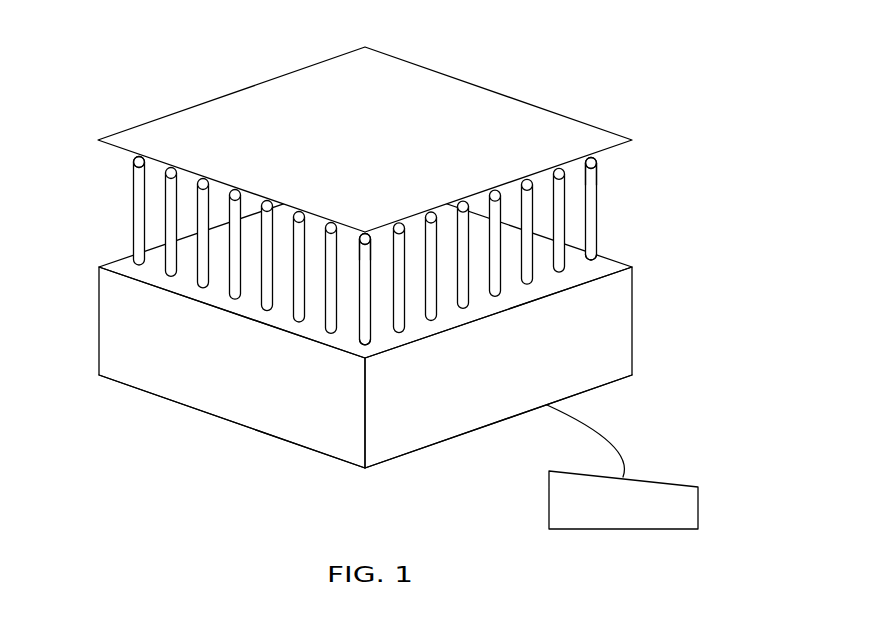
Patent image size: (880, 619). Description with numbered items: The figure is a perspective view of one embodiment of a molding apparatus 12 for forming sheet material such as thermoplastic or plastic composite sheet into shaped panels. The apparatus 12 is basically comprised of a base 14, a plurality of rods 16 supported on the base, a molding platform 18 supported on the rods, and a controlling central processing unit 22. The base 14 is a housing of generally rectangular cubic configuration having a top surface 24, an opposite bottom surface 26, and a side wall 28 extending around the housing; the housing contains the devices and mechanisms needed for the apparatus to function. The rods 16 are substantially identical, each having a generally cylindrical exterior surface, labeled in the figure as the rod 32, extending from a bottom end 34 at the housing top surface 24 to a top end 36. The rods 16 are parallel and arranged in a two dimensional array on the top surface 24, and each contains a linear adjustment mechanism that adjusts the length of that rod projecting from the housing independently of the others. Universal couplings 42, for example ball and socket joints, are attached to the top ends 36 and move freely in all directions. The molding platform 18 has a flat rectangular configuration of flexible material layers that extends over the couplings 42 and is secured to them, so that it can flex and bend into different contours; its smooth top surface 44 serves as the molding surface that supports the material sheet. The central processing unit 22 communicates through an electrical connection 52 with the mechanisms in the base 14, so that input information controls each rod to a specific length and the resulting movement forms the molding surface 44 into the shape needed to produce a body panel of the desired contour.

The apparatus 12 is at (416, 272).
The base 14 is at (378, 322).
The rods 16 is at (378, 241).
The molding platform 18 is at (365, 126).
The central processing unit 22 is at (710, 505).
The top surface 24 is at (120, 263).
The bottom surface 26 is at (168, 400).
The side wall 28 is at (118, 335).
The pin fin 32 is at (137, 210).
The bottom end 34 is at (595, 257).
The top end 36 is at (598, 176).
The universal couplings 42 is at (134, 162).
The top surface 44 is at (293, 97).
The electrical connection 52 is at (610, 443).